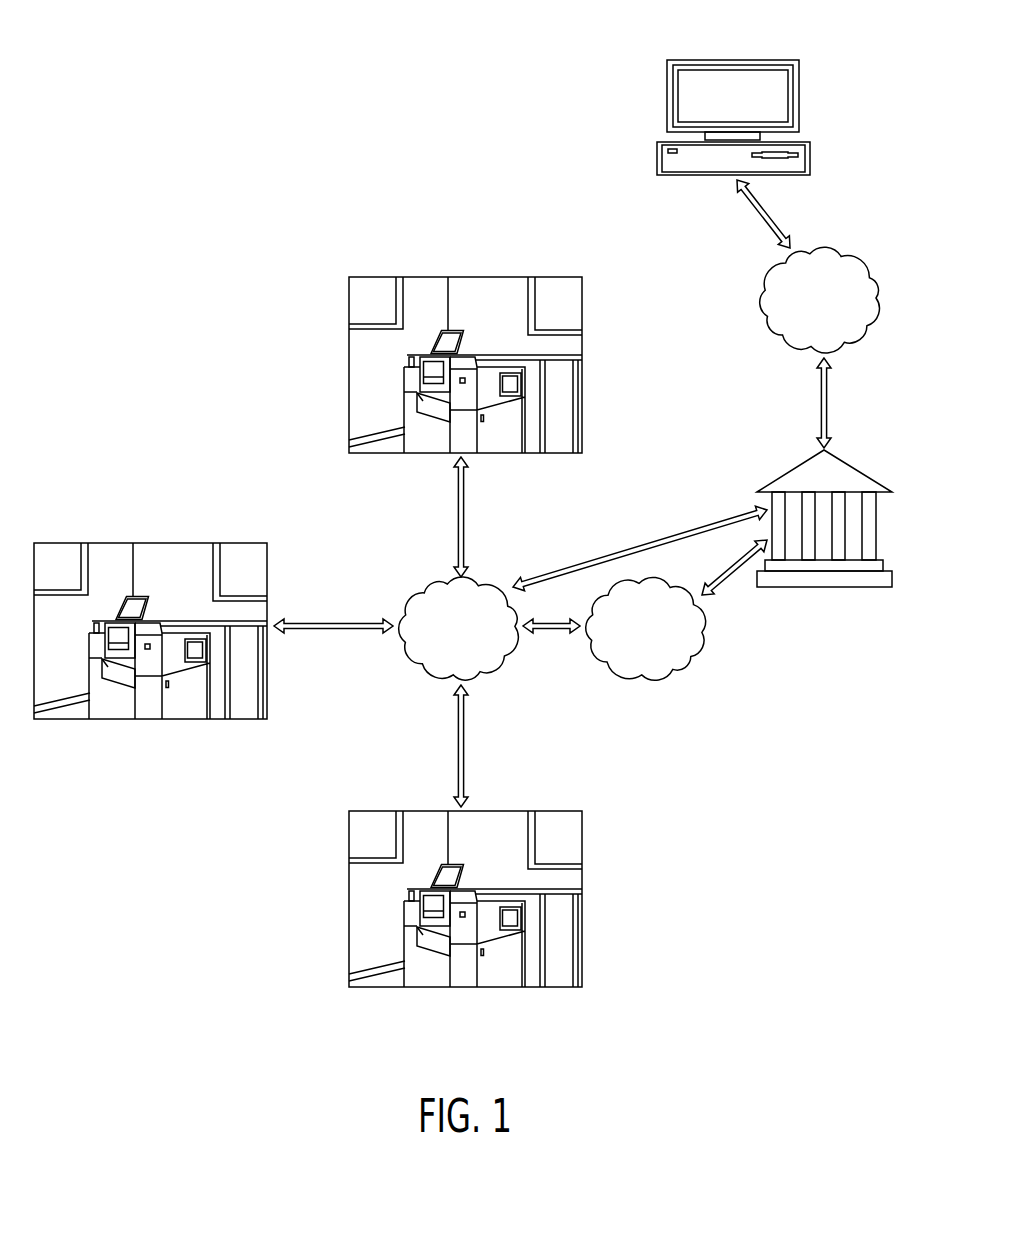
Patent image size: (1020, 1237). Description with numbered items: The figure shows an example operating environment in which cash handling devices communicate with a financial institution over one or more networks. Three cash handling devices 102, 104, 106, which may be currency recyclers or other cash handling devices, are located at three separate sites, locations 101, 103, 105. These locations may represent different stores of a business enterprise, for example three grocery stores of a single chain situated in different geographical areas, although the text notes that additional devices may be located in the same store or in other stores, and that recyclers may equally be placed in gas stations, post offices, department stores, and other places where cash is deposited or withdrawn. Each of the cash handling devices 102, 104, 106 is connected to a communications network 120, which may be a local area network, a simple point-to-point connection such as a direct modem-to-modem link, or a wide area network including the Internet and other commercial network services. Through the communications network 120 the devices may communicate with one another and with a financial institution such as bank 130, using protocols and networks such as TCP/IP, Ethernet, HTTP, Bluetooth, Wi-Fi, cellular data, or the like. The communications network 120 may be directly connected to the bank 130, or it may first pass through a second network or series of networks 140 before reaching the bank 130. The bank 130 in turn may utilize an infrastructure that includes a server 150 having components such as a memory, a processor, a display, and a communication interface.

The location 101 is at (479, 290).
The cash handling device 102 is at (425, 440).
The location 103 is at (167, 553).
The cash handling device 104 is at (107, 703).
The location 105 is at (358, 887).
The cash handling device 106 is at (429, 977).
The communications network 120 is at (497, 667).
The bank 130 is at (795, 466).
The second network or series of networks 140 is at (650, 680).
The server 150 is at (767, 59).